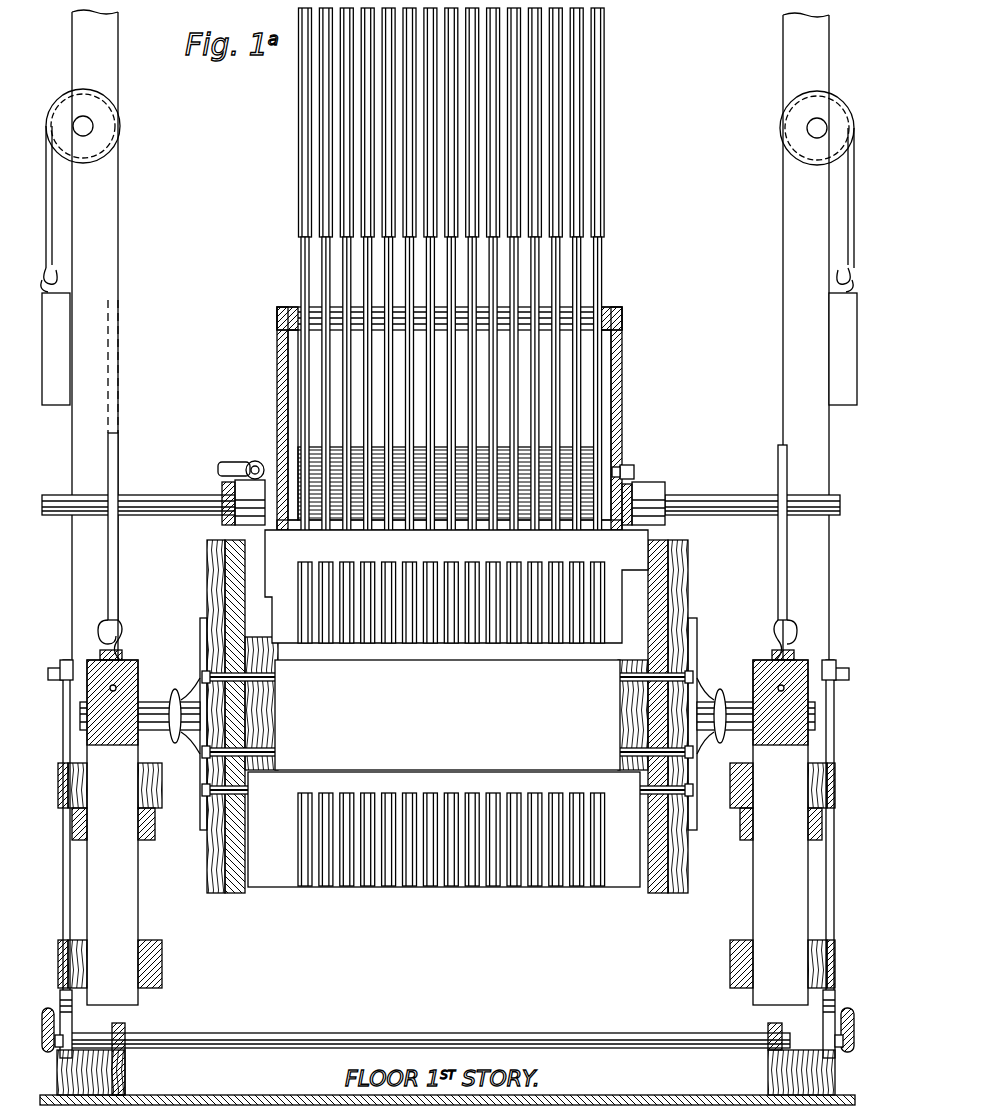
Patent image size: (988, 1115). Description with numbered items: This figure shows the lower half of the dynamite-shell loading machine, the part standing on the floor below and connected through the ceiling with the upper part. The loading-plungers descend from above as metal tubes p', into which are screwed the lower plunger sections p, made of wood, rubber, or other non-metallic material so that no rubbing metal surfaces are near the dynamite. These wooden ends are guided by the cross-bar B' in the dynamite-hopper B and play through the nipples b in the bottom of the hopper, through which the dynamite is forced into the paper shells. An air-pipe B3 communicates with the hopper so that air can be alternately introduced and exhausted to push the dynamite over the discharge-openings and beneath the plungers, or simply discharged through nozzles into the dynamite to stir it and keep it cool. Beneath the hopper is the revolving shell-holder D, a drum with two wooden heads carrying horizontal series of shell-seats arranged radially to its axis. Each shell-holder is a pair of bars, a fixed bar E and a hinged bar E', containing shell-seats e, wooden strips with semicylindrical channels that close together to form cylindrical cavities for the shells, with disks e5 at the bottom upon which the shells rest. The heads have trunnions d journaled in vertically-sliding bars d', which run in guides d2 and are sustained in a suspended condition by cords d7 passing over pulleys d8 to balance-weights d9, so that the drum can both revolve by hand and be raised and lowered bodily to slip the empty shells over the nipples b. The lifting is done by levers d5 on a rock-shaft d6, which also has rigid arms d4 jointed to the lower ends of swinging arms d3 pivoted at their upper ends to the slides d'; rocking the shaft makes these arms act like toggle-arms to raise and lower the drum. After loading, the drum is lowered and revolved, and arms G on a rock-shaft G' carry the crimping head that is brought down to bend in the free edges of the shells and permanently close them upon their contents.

The metal tubes p' is at (449, 122).
The plunger sections p is at (440, 387).
The dynamite-hopper B is at (444, 418).
The cross-bar B' is at (467, 307).
The air-pipe B3 is at (238, 458).
The nipples b is at (302, 540).
The arms G is at (454, 510).
The rock-shaft G' is at (441, 508).
The revolving shell-holder D is at (441, 715).
The fixed bar E is at (456, 586).
The shell-seats e is at (451, 602).
The hinged bar E' is at (444, 829).
The disks e5 is at (470, 792).
The trunnions d is at (447, 716).
The vertically-sliding bars d' is at (447, 827).
The guides d2 is at (150, 818).
The swinging arms d3 is at (63, 880).
The rigid arms d4 is at (72, 1022).
The levers d5 is at (48, 1052).
The rock-shaft d6 is at (410, 1033).
The cords d7 is at (118, 545).
The pulleys d8 is at (100, 126).
The balance-weights d9 is at (449, 349).